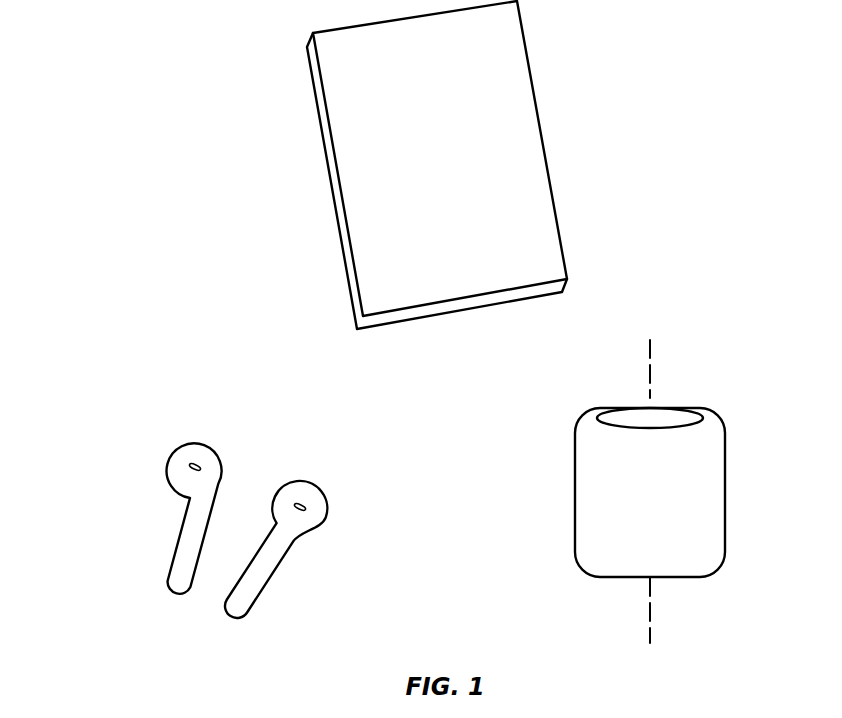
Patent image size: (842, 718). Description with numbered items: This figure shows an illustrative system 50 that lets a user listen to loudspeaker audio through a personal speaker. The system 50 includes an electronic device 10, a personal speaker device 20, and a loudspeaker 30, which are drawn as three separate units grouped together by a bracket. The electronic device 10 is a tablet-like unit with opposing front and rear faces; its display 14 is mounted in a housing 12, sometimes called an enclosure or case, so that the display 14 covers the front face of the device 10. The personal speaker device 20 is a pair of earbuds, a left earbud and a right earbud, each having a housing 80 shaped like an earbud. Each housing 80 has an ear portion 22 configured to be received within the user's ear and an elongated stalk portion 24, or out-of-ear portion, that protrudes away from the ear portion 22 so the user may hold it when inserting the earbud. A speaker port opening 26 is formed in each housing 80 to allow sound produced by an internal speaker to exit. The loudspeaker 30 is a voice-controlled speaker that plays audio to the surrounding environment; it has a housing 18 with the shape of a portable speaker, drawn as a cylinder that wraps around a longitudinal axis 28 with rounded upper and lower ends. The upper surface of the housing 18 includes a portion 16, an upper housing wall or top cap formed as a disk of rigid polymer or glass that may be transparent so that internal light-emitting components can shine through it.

The electronic device 10 is at (576, 168).
The housing 12 is at (322, 124).
The display 14 is at (522, 108).
The portion 16 is at (664, 416).
The housing 18 is at (688, 565).
The personal speaker device 20 is at (275, 425).
The ear portion 22 is at (336, 501).
The elongated stalk portion 24 is at (182, 497).
The speaker port opening 26 is at (188, 467).
The longitudinal axis 28 is at (648, 612).
The loudspeaker 30 is at (757, 460).
The system 50 is at (88, 13).
The housing 80 is at (233, 577).